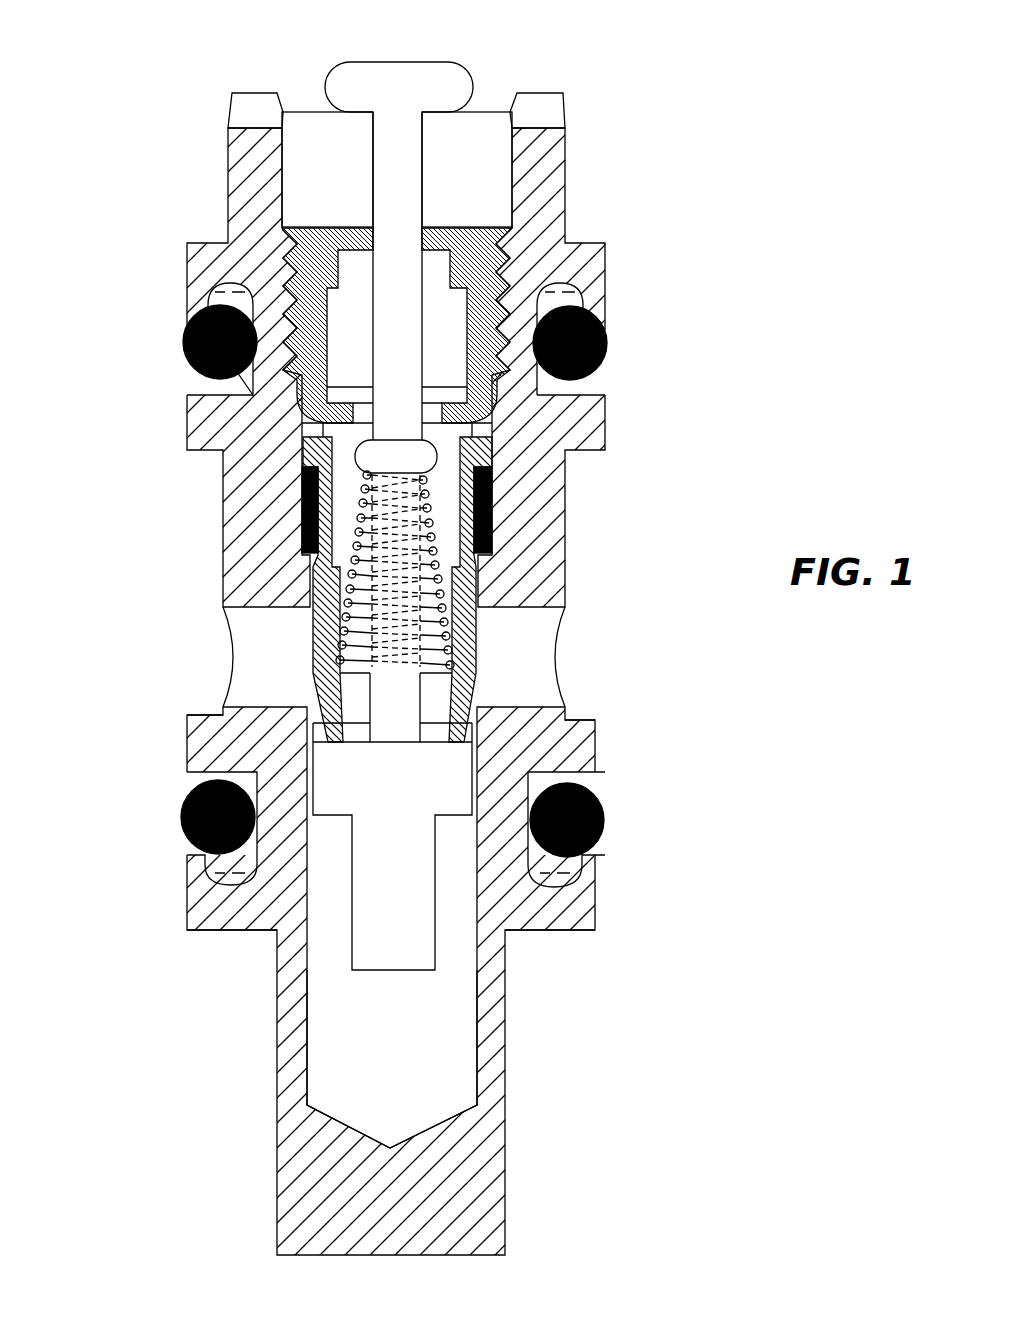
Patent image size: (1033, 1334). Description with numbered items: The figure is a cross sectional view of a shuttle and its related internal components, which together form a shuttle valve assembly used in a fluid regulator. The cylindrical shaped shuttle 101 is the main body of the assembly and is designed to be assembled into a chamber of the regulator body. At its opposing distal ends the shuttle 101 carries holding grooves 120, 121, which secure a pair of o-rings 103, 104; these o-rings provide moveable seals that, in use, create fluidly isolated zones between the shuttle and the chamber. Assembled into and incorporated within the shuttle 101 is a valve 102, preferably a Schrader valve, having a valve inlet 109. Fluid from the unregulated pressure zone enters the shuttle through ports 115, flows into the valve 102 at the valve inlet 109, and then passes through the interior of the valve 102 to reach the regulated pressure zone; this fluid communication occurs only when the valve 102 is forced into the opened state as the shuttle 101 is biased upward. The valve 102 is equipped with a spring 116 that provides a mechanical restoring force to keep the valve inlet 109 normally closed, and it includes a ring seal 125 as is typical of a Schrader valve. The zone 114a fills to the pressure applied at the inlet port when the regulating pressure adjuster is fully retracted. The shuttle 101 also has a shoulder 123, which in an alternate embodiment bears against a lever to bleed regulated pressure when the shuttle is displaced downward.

The shuttle 101 is at (223, 560).
The valve 102 is at (474, 64).
The o-ring 103 is at (183, 343).
The o-ring 104 is at (607, 812).
The valve inlet 109 is at (460, 700).
The zone 114a is at (388, 1050).
The ports 115 is at (560, 653).
The spring 116 is at (440, 537).
The holding groove 120 is at (557, 300).
The holding groove 121 is at (557, 870).
The shoulder 123 is at (227, 933).
The ring seal 125 is at (298, 513).